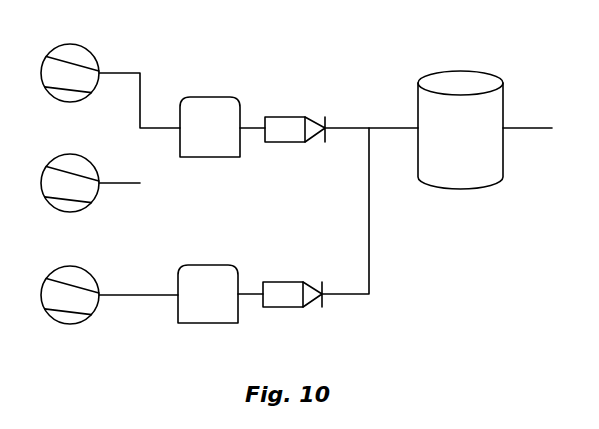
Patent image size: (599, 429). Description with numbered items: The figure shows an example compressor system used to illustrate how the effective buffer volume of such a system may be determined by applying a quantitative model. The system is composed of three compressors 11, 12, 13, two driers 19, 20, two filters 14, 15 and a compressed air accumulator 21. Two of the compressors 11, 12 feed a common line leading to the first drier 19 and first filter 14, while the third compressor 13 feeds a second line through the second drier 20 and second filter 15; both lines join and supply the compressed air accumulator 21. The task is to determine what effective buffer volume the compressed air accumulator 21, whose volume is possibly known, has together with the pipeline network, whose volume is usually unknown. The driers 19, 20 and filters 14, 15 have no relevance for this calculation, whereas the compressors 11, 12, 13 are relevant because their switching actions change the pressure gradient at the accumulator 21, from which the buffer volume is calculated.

The compressor 11 is at (84, 56).
The compressor 12 is at (80, 163).
The compressor 13 is at (80, 270).
The filter 14 is at (315, 115).
The filter 15 is at (295, 282).
The drier 19 is at (230, 104).
The drier 20 is at (210, 264).
The compressed air accumulator 21 is at (462, 173).